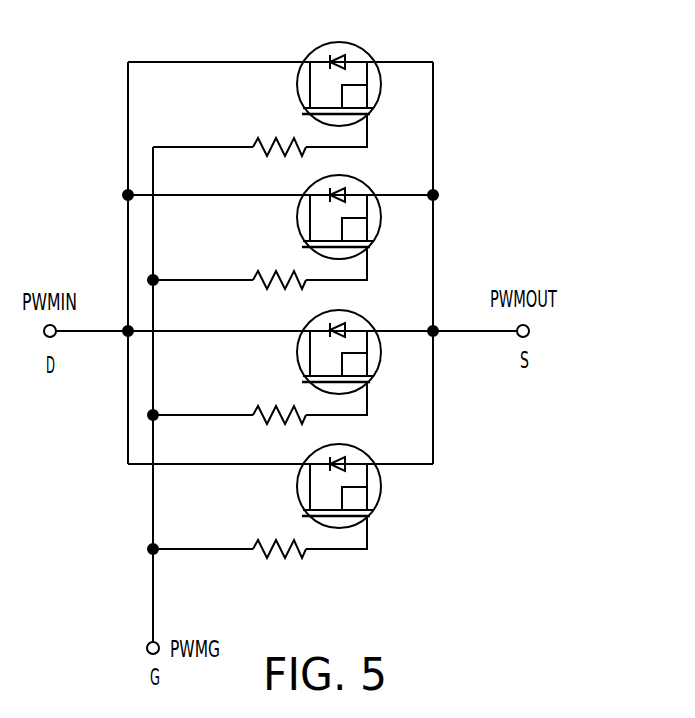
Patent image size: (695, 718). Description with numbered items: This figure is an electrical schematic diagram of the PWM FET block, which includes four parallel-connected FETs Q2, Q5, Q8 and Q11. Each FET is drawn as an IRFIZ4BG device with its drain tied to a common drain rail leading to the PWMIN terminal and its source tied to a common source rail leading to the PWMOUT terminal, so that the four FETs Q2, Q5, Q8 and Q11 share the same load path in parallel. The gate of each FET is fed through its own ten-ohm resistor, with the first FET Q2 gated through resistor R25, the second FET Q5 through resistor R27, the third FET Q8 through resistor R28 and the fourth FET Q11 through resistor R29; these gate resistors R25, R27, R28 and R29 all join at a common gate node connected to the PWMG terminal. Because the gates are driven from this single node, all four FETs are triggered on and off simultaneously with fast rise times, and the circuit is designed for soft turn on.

The FET Q2 is at (307, 82).
The FET Q5 is at (307, 215).
The FET Q8 is at (307, 350).
The FET Q11 is at (307, 482).
The gate resistor 10.0 ohm R25 is at (279, 120).
The gate resistor 10.0 ohm R27 is at (279, 253).
The gate resistor 10.0 ohm R28 is at (279, 388).
The gate resistor 10.0 ohm R29 is at (279, 522).